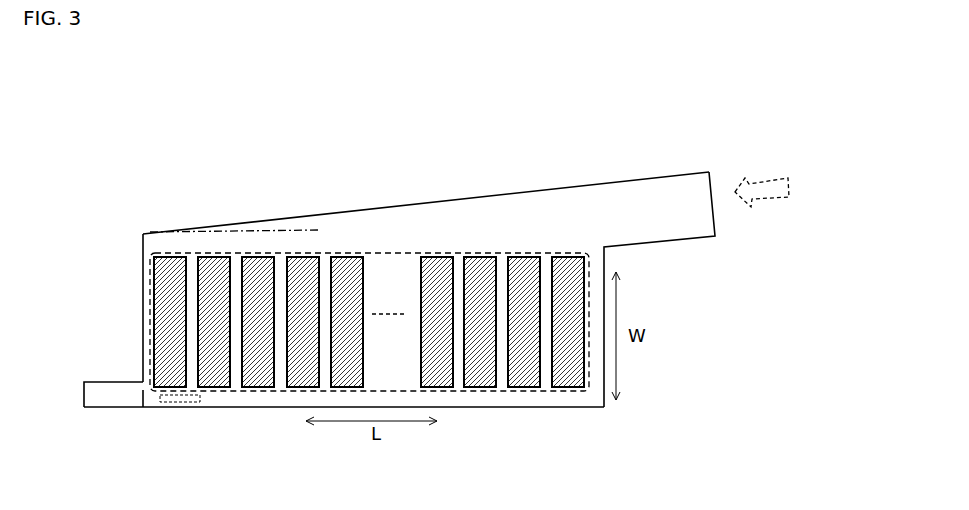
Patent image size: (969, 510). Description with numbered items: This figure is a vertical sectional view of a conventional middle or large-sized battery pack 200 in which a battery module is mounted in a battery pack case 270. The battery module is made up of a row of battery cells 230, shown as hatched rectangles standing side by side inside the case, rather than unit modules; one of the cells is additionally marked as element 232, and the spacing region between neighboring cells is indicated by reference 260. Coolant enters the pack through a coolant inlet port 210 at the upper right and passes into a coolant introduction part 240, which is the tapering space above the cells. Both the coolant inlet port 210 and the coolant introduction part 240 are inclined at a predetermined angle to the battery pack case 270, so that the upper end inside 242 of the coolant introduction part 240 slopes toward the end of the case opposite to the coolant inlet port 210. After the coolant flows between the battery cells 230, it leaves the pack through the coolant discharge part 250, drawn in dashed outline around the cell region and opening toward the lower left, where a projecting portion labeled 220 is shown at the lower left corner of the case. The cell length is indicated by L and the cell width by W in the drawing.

The middle or large-sized battery pack 200 is at (38, 104).
The coolant inlet port 210 is at (715, 218).
The tab 220 is at (83, 397).
The battery cells 230 is at (220, 388).
The battery cell electrode 232 is at (494, 389).
The coolant introduction part 240 is at (483, 232).
The upper end inside of the coolant introduction part 242 is at (282, 229).
The coolant discharge part 250 is at (285, 399).
The gap between cells 260 is at (548, 370).
The battery pack case 270 is at (134, 260).